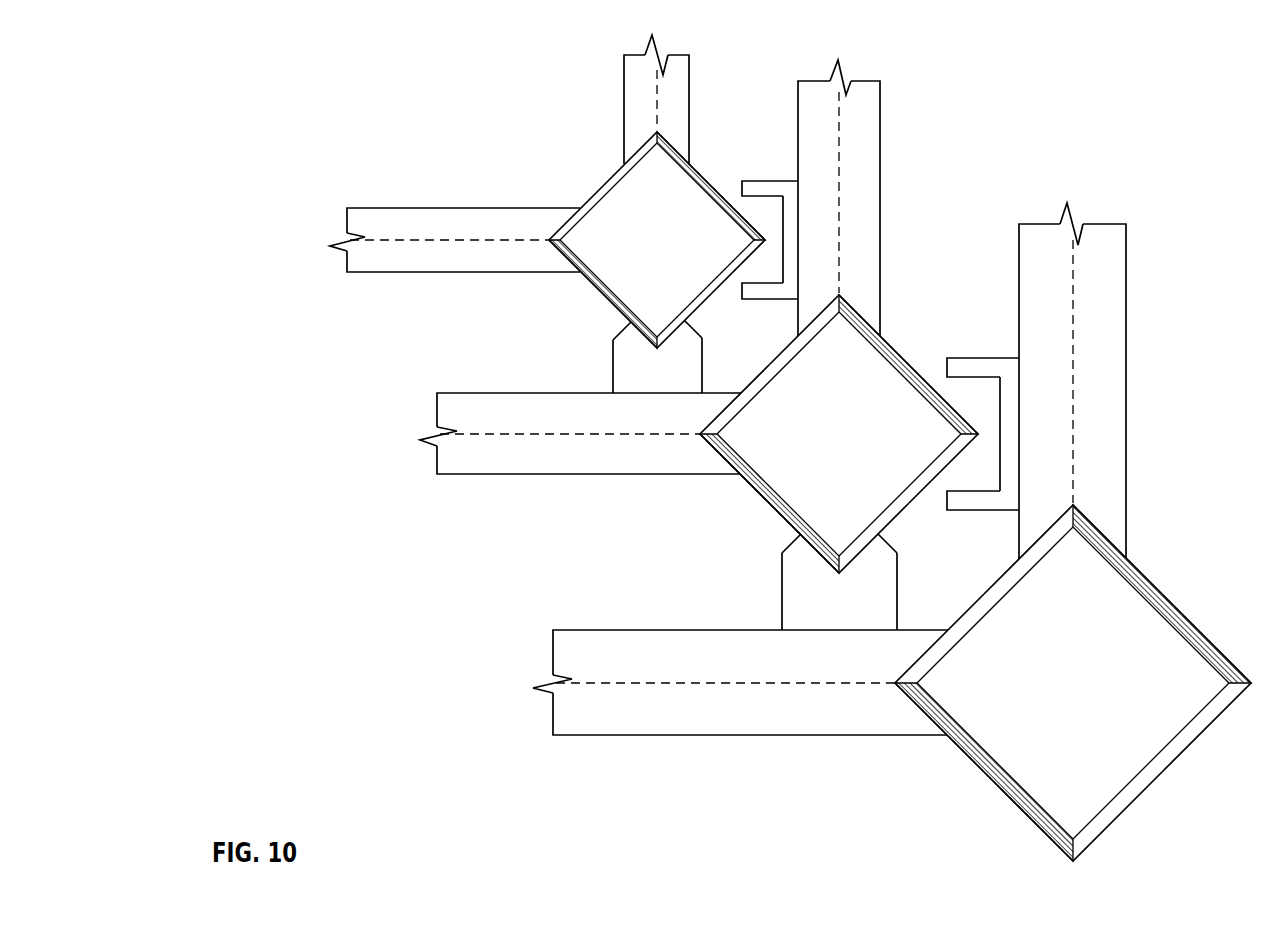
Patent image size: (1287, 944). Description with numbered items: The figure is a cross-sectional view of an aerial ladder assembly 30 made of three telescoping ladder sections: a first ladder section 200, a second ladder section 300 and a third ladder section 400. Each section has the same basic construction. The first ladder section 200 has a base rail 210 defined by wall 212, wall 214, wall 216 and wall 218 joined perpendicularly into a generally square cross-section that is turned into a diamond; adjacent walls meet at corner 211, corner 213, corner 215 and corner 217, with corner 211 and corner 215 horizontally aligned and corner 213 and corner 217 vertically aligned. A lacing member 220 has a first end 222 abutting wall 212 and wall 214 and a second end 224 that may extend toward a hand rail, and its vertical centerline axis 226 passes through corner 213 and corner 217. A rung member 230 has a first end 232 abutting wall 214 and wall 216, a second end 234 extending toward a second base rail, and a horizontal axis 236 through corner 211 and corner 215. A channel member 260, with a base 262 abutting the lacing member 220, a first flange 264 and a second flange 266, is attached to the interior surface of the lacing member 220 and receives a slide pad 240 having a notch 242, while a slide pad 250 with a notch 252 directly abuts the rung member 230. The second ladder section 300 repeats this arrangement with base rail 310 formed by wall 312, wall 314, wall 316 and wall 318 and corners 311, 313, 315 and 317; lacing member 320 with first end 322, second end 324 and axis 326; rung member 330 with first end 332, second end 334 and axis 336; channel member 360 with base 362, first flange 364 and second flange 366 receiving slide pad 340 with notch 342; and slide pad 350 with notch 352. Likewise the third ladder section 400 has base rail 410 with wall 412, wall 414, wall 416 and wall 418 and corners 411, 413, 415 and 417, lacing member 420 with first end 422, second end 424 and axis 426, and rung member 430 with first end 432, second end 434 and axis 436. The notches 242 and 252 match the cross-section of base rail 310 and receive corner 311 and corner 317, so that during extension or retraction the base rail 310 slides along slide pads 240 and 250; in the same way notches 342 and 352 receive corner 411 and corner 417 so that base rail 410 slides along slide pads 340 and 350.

The aerial ladder assembly 30 is at (278, 98).
The first ladder section 200 is at (1210, 197).
The base rail 210 is at (1005, 800).
The corner 211 is at (1222, 683).
The wall 212 is at (1148, 603).
The corner 213 is at (1070, 535).
The wall 214 is at (998, 604).
The corner 215 is at (925, 683).
The wall 216 is at (997, 762).
The corner 217 is at (1072, 835).
The wall 218 is at (1148, 764).
The lacing member 220 is at (1135, 380).
The first end 222 is at (1135, 515).
The second end 224 is at (1105, 202).
The axis 226 is at (1075, 342).
The rung member 230 is at (760, 745).
The first end 232 is at (920, 745).
The second end 234 is at (537, 715).
The axis 236 is at (673, 685).
The slide pad 240 is at (945, 494).
The notch 242 is at (966, 471).
The slide pad 250 is at (780, 599).
The notch 252 is at (823, 568).
The channel member 260 is at (1003, 350).
The base 262 is at (1020, 380).
The first flange 264 is at (983, 358).
The second flange 266 is at (975, 512).
The second ladder section 300 is at (955, 177).
The base rail 310 is at (770, 513).
The corner 311 is at (950, 440).
The wall 312 is at (903, 378).
The corner 313 is at (843, 315).
The wall 314 is at (783, 368).
The corner 315 is at (722, 432).
The wall 316 is at (762, 478).
The corner 317 is at (835, 550).
The wall 318 is at (900, 494).
The lacing member 320 is at (887, 228).
The first end 322 is at (882, 322).
The second end 324 is at (875, 77).
The axis 326 is at (845, 162).
The rung member 330 is at (588, 482).
The first end 332 is at (710, 482).
The second end 334 is at (415, 450).
The axis 336 is at (510, 437).
The slide pad 340 is at (739, 284).
The notch 342 is at (754, 266).
The slide pad 350 is at (612, 358).
The notch 352 is at (646, 340).
The channel member 360 is at (779, 170).
The base 362 is at (800, 218).
The first flange 364 is at (756, 179).
The second flange 366 is at (773, 301).
The third ladder section 400 is at (752, 74).
The base rail 410 is at (580, 286).
The corner 411 is at (748, 243).
The wall 412 is at (704, 190).
The corner 413 is at (657, 148).
The wall 414 is at (606, 192).
The corner 415 is at (563, 243).
The wall 416 is at (596, 274).
The corner 417 is at (655, 333).
The wall 418 is at (703, 291).
The lacing member 420 is at (693, 115).
The first end 422 is at (622, 126).
The second end 424 is at (700, 46).
The axis 426 is at (650, 100).
The rung member 430 is at (476, 200).
The first end 432 is at (563, 200).
The second end 434 is at (333, 226).
The axis 436 is at (400, 240).